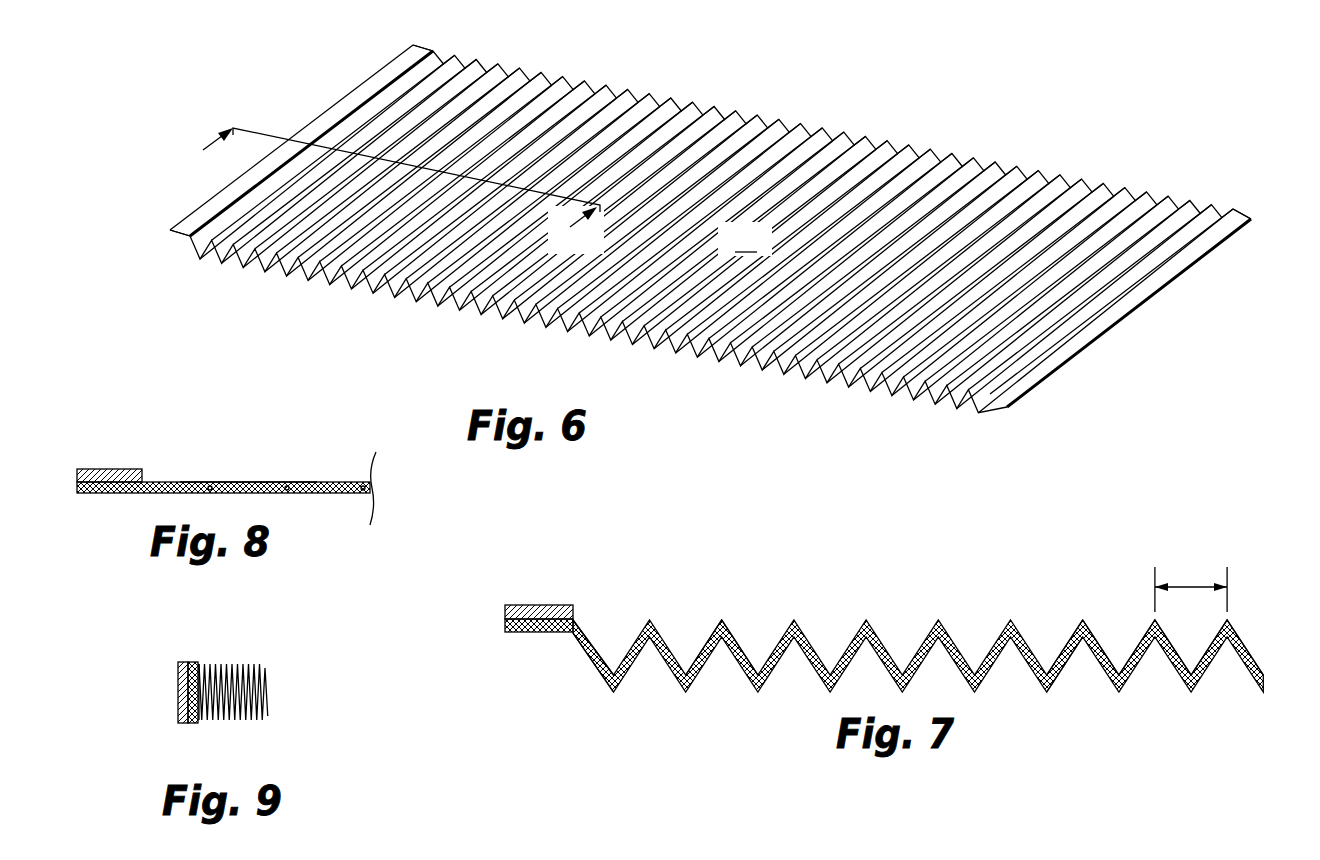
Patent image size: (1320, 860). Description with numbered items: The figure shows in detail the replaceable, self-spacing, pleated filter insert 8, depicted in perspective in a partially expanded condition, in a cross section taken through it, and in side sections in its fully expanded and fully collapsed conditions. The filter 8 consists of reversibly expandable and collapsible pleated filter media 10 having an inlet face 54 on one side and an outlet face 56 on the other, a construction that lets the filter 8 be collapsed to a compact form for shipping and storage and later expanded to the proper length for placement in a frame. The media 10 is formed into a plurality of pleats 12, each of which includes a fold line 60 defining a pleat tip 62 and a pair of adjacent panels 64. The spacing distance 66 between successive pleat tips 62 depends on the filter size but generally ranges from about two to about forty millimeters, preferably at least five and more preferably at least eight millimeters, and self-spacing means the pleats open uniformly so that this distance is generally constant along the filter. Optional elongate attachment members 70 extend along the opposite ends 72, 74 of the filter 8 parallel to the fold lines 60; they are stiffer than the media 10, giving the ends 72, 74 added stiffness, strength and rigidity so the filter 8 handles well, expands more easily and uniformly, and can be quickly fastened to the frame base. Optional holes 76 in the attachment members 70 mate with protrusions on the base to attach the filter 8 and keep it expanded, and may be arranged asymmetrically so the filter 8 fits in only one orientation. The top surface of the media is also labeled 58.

In FIG. 6, the pleated filter insert 8 is at (714, 224).
In FIG. 7, the pleated filter insert 8 is at (877, 637).
In FIG. 6, the pleated filter media 10 is at (657, 343).
In FIG. 7, the pleated filter media 10 is at (995, 662).
In FIG. 9, the pleated filter media 10 is at (245, 722).
In FIG. 6, the pleats 12 is at (410, 297).
In FIG. 7, the pleats 12 is at (738, 660).
In FIG. 8, the pleats 12 is at (317, 482).
In FIG. 9, the pleats 12 is at (212, 722).
In FIG. 6, the inlet face 54 is at (703, 105).
In FIG. 7, the inlet face 54 is at (589, 576).
In FIG. 6, the outlet face 56 is at (800, 378).
In FIG. 7, the outlet face 56 is at (589, 741).
In FIG. 6, the top surface 58 is at (757, 252).
In FIG. 7, the fold line 60 is at (1065, 652).
In FIG. 8, the fold line 60 is at (363, 493).
In FIG. 6, the pleat tip 62 is at (493, 298).
In FIG. 7, the pleat tip 62 is at (1154, 618).
In FIG. 7, the adjacent panels 64 is at (1053, 670).
In FIG. 7, the spacing distance 66 is at (1190, 583).
In FIG. 6, the elongate attachment members 70 is at (330, 112).
In FIG. 7, the elongate attachment members 70 is at (540, 605).
In FIG. 8, the elongate attachment members 70 is at (100, 469).
In FIG. 9, the elongate attachment members 70 is at (180, 700).
In FIG. 6, the end of the filter 72 is at (432, 49).
In FIG. 7, the end of the filter 72 is at (505, 620).
In FIG. 8, the end of the filter 72 is at (77, 487).
In FIG. 9, the end of the filter 72 is at (185, 722).
In FIG. 6, the end of the filter 74 is at (1240, 211).
In FIG. 6, the holes 76 is at (378, 86).